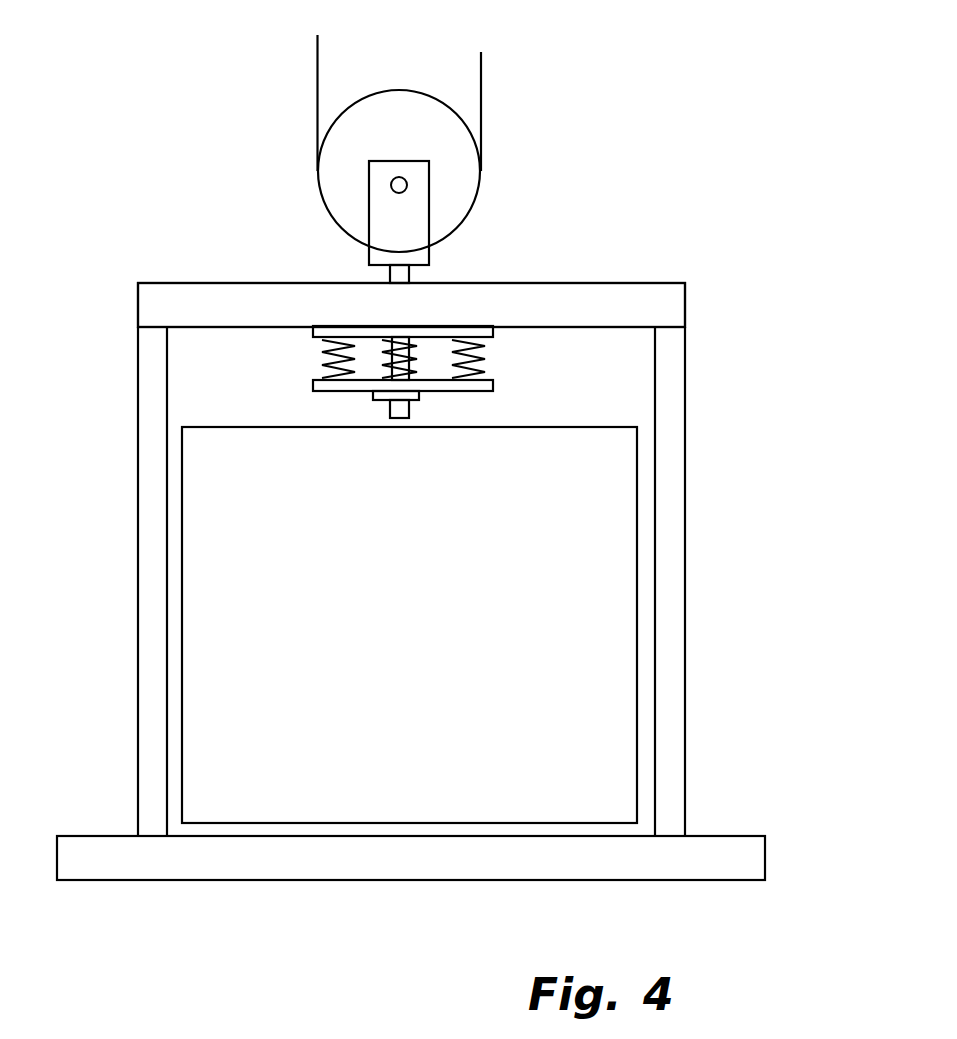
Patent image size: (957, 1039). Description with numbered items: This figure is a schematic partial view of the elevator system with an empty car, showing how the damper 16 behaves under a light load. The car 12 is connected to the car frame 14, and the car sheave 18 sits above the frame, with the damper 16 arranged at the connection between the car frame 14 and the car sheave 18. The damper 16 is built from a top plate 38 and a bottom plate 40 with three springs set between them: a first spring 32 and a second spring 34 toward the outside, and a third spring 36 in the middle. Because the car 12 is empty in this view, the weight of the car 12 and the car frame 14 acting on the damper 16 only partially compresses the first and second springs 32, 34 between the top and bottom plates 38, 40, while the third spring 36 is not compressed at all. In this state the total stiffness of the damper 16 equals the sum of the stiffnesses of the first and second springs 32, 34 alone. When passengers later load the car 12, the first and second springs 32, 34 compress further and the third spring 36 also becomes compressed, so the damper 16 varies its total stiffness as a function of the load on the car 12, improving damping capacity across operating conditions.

The car 12 is at (208, 427).
The car frame 14 is at (685, 400).
The damper 16 is at (447, 304).
The car sheave 18 is at (451, 110).
The first spring 32 is at (330, 345).
The second spring 34 is at (483, 359).
The third spring 36 is at (393, 352).
The top plate 38 is at (493, 332).
The bottom plate 40 is at (313, 390).